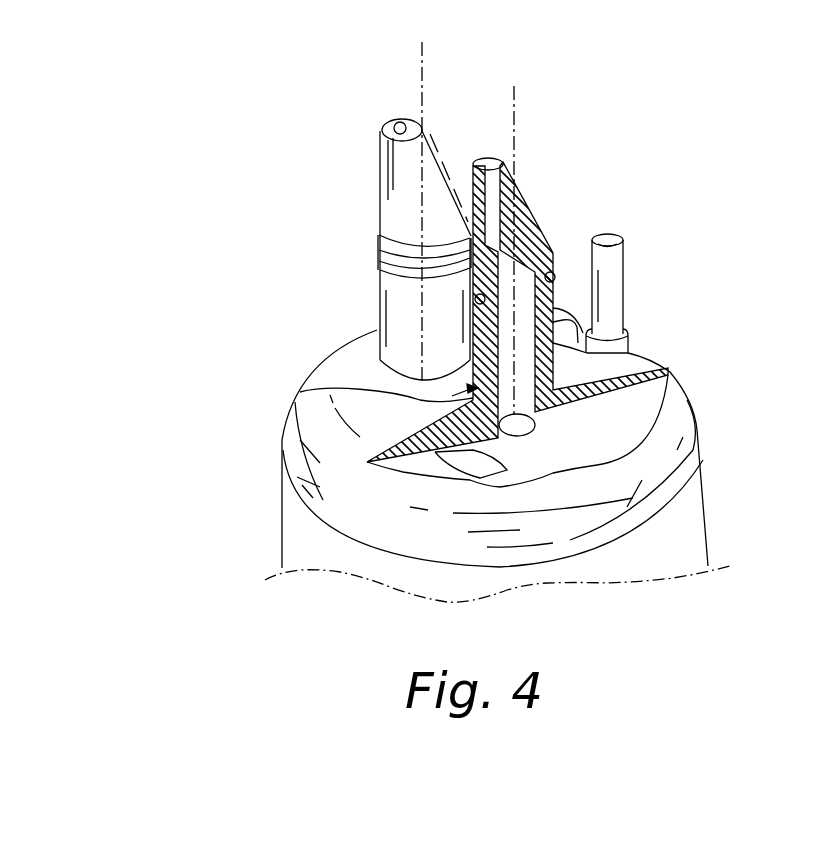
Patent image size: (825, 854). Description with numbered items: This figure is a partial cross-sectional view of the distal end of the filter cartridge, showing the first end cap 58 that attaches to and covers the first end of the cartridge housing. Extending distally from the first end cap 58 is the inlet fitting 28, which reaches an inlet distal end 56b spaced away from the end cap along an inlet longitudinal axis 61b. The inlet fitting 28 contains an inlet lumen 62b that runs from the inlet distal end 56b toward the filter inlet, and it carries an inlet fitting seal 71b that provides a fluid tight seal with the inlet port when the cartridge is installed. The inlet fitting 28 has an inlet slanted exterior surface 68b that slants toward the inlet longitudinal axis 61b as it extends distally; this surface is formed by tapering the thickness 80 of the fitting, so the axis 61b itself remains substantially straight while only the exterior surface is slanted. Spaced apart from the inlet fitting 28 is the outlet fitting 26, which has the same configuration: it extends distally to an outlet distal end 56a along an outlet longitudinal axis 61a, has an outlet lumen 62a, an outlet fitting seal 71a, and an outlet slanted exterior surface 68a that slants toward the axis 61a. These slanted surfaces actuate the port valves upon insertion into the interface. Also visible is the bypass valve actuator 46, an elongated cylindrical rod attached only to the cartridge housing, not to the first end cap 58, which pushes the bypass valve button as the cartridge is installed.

The outlet fitting 26 is at (388, 305).
The inlet fitting 28 is at (300, 391).
The bypass valve actuator 46 is at (622, 288).
The outlet distal end 56a is at (392, 124).
The inlet distal end 56b is at (504, 162).
The first end cap 58 is at (688, 472).
The outlet longitudinal axis 61a is at (424, 68).
The inlet longitudinal axis 61b is at (516, 108).
The outlet lumen 62a is at (398, 130).
The inlet lumen 62b is at (538, 430).
The outlet slanted exterior surface 68a is at (440, 168).
The inlet slanted exterior surface 68b is at (527, 196).
The outlet fitting seal 71a is at (466, 238).
The inlet fitting seal 71b is at (560, 272).
The thickness 80 is at (550, 220).